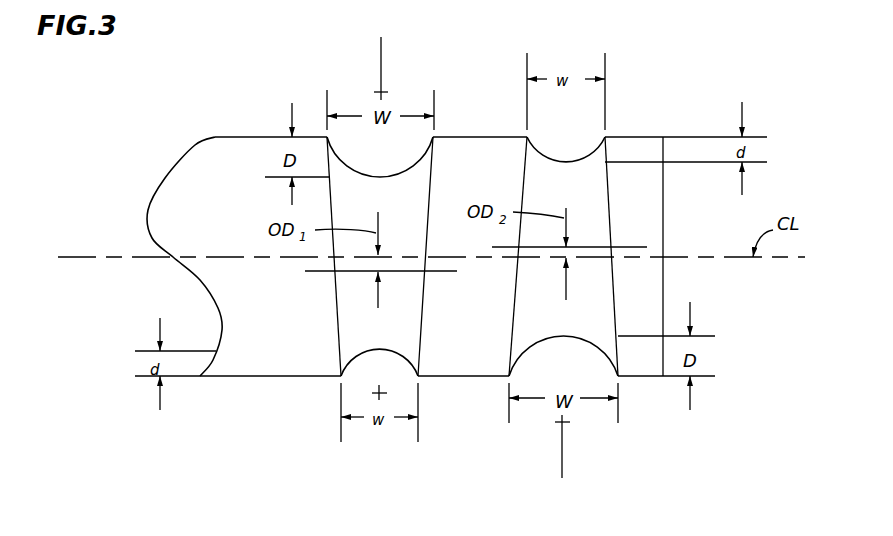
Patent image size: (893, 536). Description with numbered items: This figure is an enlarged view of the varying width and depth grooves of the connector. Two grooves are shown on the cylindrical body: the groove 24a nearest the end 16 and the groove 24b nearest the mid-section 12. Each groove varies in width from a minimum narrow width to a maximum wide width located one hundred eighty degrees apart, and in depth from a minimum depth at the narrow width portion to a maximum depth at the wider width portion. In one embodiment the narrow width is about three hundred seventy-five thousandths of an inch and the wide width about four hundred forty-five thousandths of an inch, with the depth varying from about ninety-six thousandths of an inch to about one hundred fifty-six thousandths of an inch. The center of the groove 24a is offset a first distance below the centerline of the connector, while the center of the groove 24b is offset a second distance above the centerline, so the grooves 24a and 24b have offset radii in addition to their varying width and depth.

The mid-section 12 is at (643, 137).
The end 16 is at (213, 137).
The groove 24a is at (385, 195).
The groove 24b is at (557, 196).